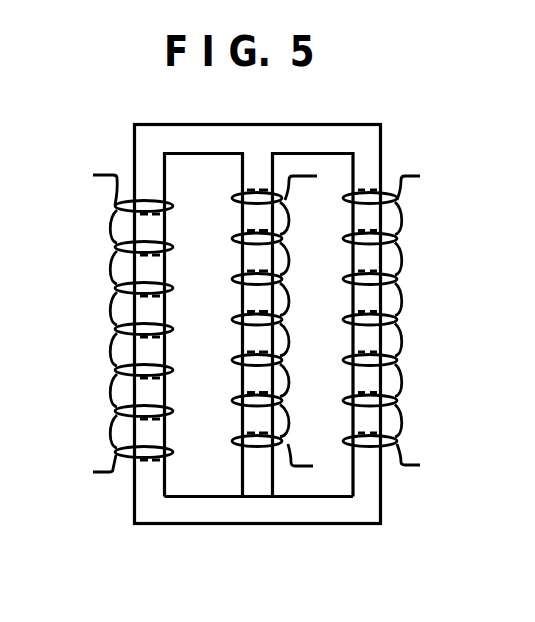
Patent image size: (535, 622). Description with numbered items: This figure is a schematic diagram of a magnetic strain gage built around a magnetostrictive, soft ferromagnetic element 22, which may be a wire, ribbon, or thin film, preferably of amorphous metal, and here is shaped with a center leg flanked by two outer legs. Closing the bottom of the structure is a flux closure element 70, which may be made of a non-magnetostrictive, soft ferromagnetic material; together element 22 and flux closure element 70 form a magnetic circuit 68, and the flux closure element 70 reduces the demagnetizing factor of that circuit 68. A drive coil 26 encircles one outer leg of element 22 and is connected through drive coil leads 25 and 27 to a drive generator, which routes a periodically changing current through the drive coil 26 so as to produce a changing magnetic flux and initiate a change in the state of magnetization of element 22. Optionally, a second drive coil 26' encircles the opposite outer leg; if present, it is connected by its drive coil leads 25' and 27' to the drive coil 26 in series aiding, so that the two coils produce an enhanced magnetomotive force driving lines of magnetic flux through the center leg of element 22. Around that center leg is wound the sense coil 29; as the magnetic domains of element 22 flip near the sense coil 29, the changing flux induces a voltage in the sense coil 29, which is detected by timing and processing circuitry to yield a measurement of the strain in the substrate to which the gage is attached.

The magnetostrictive, soft ferromagnetic element 22 is at (356, 123).
The drive coil lead 25 is at (76, 164).
The drive coil 26 is at (106, 331).
The drive coil lead 27 is at (85, 498).
The drive coil lead 25' is at (434, 163).
The second drive coil 26' is at (409, 318).
The drive coil lead 27' is at (451, 472).
The sense coil 29 is at (249, 455).
The magnetic circuit 68 is at (396, 491).
The flux closure element 70 is at (258, 527).